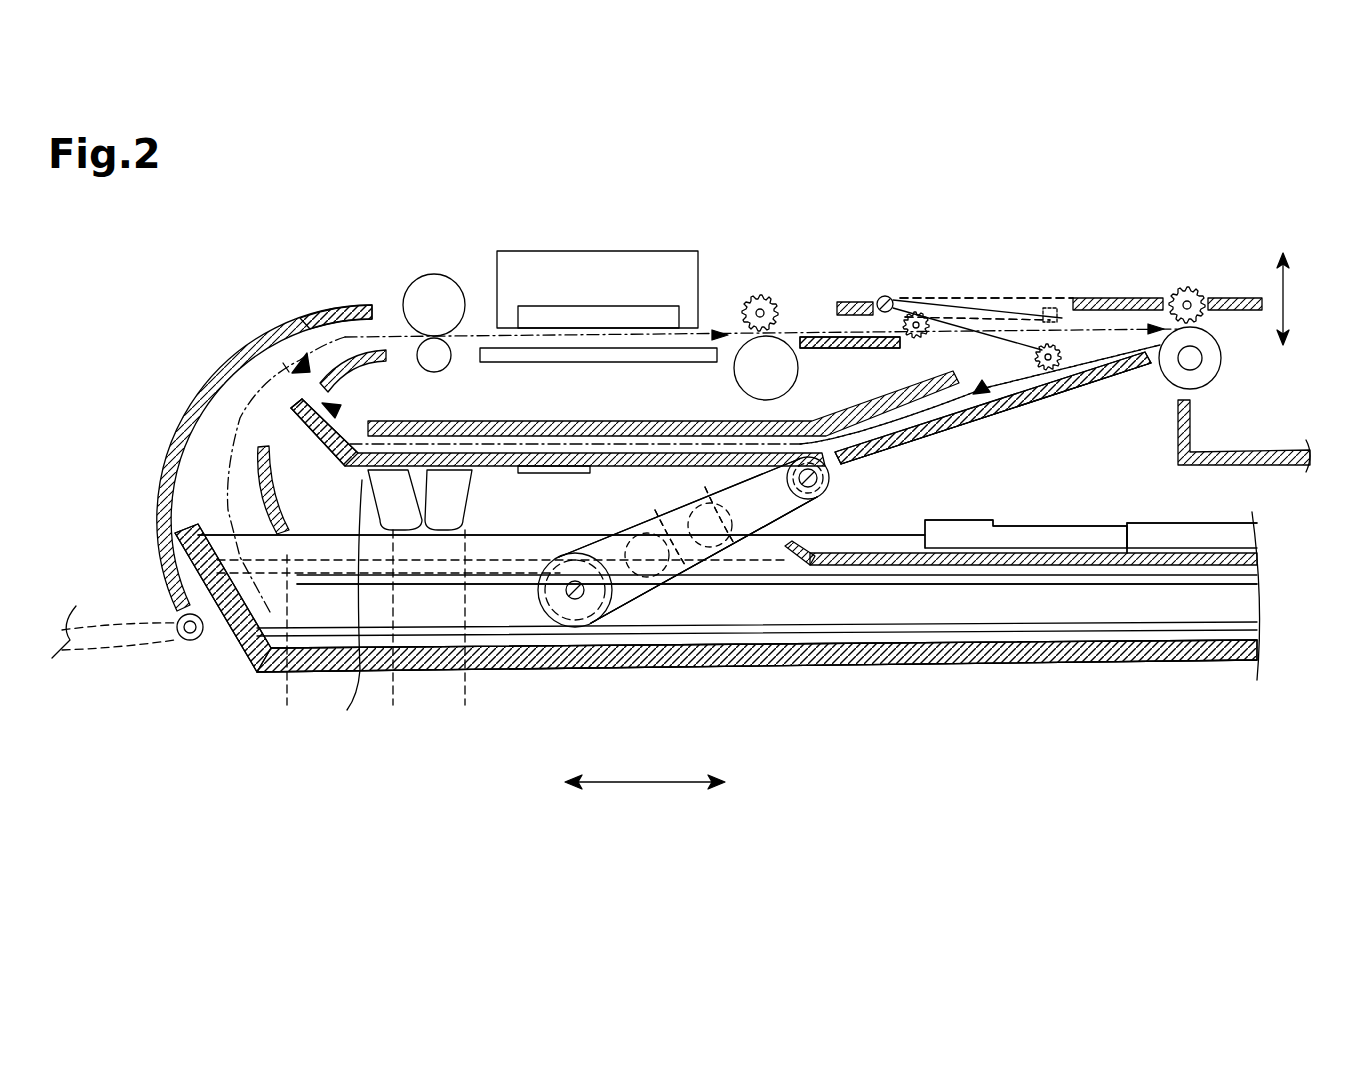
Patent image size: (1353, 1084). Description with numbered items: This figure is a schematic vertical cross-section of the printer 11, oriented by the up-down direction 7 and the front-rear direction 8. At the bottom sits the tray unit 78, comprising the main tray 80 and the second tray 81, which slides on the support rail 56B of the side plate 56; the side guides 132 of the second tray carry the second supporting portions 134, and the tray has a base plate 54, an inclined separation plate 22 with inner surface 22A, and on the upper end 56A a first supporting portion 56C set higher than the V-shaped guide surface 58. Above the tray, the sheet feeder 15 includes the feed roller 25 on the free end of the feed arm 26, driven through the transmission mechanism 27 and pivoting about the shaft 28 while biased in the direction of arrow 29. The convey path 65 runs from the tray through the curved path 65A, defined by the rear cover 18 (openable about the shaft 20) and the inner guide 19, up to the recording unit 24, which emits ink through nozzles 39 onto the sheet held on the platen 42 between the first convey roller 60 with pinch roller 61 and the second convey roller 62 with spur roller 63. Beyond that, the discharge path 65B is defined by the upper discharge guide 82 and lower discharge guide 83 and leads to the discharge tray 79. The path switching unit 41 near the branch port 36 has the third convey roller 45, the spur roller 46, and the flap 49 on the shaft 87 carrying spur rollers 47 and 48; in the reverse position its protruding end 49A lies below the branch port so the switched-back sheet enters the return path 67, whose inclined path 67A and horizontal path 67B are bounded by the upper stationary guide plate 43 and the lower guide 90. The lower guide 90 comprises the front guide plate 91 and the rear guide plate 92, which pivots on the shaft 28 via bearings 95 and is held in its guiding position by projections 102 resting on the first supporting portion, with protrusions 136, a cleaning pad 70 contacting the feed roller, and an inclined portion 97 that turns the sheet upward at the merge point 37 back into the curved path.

The up-down direction 7 is at (1281, 297).
The front-rear direction 8 is at (640, 784).
The printer 11 is at (342, 225).
The sheet feeder 15 is at (642, 604).
The rear cover 18 is at (218, 366).
The inner guide 19 is at (380, 361).
The shaft 20 is at (188, 642).
The inclined separation plate 22 is at (245, 630).
The inner surface 22A is at (188, 526).
The recording unit 24 is at (524, 238).
The feed roller 25 is at (540, 597).
The feed arm 26 is at (752, 470).
The transmission mechanism 27 is at (690, 565).
The shaft 28 is at (832, 482).
The arrow 29 is at (748, 553).
The branch port 36 is at (1119, 297).
The merge point 37 is at (283, 366).
The nozzles 39 is at (596, 305).
The path switching unit 41 is at (1028, 255).
The platen 42 is at (635, 364).
The upper stationary guide plate 43 is at (528, 420).
The third convey roller 45 is at (1190, 390).
The spur roller 46 is at (1188, 288).
The spur roller 47 is at (919, 312).
The spur roller 48 is at (1050, 344).
The flap 49 is at (980, 296).
The protruding end 49A is at (1060, 322).
The base plate 54 is at (963, 664).
The side plate 56 is at (1215, 536).
The upper end 56A is at (1175, 522).
The support rail 56B is at (1132, 584).
The first supporting portion 56C is at (353, 534).
The guide surface 58 is at (625, 533).
The first convey roller 60 is at (434, 274).
The pinch roller 61 is at (446, 365).
The second convey roller 62 is at (736, 378).
The spur roller 63 is at (759, 294).
The convey path 65 is at (325, 306).
The curved path 65A is at (246, 412).
The discharge path 65B is at (812, 333).
The return path 67 is at (895, 455).
The inclined path 67A is at (900, 440).
The horizontal path 67B is at (667, 442).
The cleaning pad 70 is at (572, 474).
The tray unit 78 is at (1140, 674).
The discharge tray 79 is at (1242, 447).
The main tray 80 is at (1050, 662).
The second tray 81 is at (885, 530).
The upper discharge guide 82 is at (848, 300).
The lower discharge guide 83 is at (835, 350).
The shaft 87 is at (886, 296).
The lower guide 90 is at (1028, 465).
The front guide plate 91 is at (955, 420).
The rear guide plate 92 is at (348, 470).
The bearings 95 is at (822, 499).
The inclined portion 97 is at (297, 435).
The projections 102 is at (468, 494).
The side guides 132 is at (1165, 582).
The second supporting portions 134 is at (972, 504).
The protrusions 136 is at (351, 609).